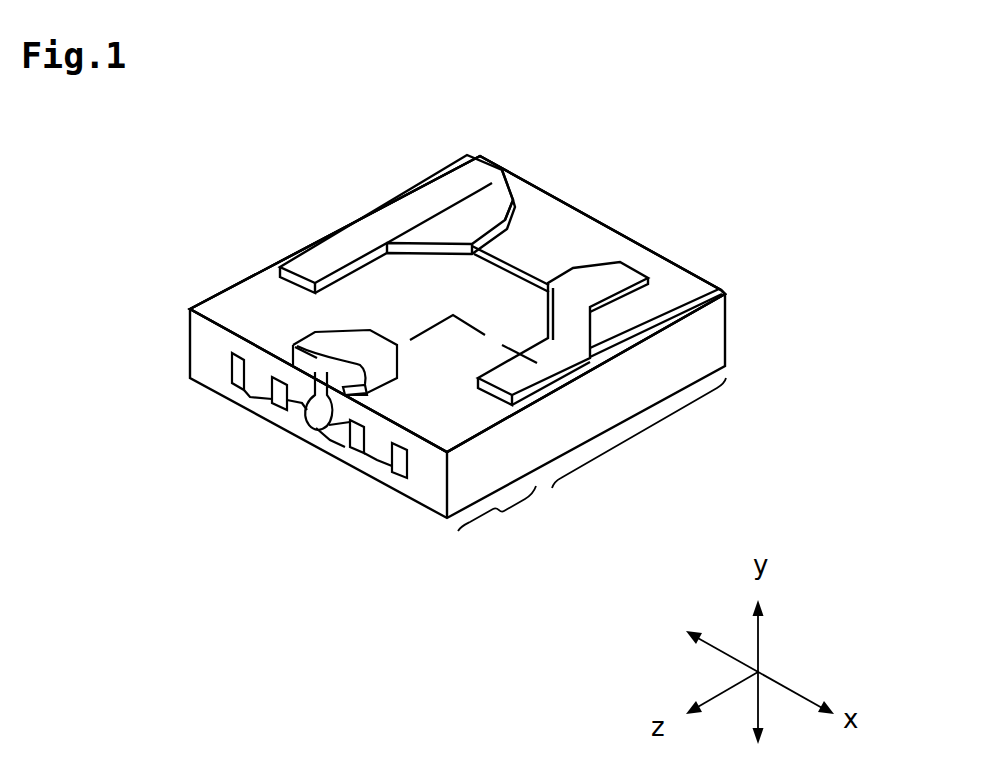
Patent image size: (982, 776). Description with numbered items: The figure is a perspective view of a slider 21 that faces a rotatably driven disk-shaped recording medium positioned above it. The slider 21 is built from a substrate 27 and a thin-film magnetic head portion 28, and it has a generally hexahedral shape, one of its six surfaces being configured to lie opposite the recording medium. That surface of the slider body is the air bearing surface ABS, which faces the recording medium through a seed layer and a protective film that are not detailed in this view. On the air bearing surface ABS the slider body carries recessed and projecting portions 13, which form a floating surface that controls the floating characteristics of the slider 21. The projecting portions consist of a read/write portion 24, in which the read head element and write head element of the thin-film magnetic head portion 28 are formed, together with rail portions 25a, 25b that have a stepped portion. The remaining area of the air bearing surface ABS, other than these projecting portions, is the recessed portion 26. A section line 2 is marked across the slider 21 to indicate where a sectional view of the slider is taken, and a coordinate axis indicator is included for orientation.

The slider 21 is at (264, 182).
The air bearing surface ABS is at (334, 302).
The rail portion 25a is at (497, 190).
The rail portion 25b is at (521, 190).
The recessed and projecting portions 13 is at (432, 278).
The recessed portion 26 is at (260, 288).
The read/write portion 24 is at (293, 346).
The substrate 27 is at (639, 433).
The thin-film magnetic head portion 28 is at (497, 514).
The line 2- 2 is at (707, 267).